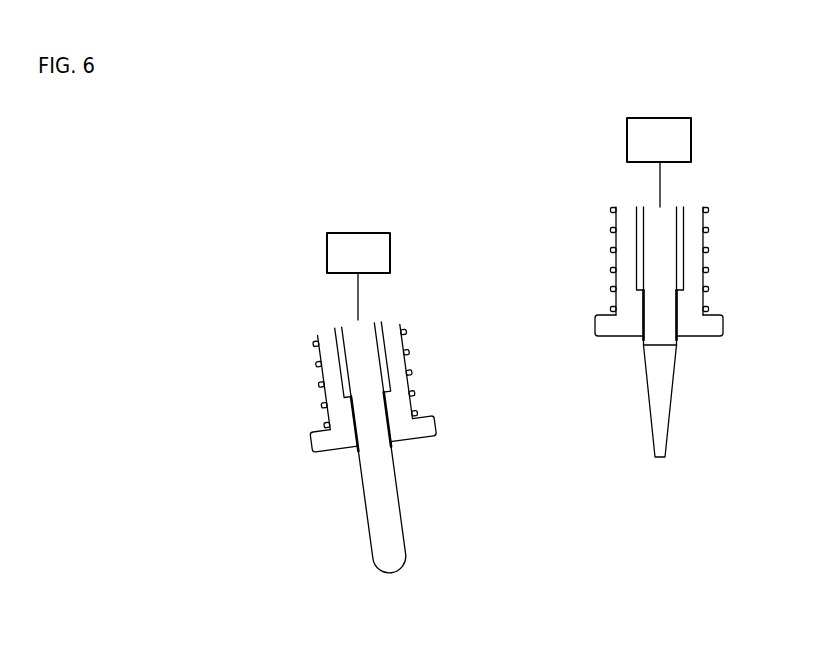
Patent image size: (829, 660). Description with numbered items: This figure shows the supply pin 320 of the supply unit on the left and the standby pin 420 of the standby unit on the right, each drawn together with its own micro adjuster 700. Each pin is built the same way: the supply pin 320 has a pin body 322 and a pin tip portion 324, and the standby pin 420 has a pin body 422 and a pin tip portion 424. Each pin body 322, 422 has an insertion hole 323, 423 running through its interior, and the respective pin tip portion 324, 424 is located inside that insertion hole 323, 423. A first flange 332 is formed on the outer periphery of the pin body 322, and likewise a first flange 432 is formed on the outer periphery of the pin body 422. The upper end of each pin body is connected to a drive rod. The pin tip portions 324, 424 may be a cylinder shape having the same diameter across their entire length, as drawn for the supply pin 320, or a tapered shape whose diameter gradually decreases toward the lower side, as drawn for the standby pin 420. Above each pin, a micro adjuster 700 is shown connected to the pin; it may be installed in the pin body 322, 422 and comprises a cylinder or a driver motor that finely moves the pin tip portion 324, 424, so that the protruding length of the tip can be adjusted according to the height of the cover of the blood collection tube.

The micro adjuster 700 is at (327, 245).
The supply pin 320 is at (215, 315).
The pin body 322 is at (328, 373).
The insertion hole 323 is at (338, 355).
The pin tip portion 324 is at (373, 513).
The first flange 332 is at (432, 433).
The standby pin 420 is at (543, 197).
The pin body 422 is at (620, 281).
The insertion hole 423 is at (640, 243).
The pin tip portion 424 is at (653, 411).
The first flange 432 is at (713, 330).